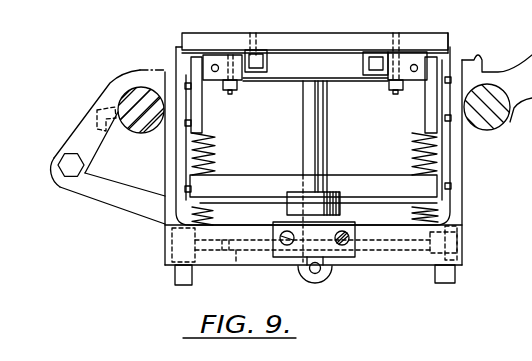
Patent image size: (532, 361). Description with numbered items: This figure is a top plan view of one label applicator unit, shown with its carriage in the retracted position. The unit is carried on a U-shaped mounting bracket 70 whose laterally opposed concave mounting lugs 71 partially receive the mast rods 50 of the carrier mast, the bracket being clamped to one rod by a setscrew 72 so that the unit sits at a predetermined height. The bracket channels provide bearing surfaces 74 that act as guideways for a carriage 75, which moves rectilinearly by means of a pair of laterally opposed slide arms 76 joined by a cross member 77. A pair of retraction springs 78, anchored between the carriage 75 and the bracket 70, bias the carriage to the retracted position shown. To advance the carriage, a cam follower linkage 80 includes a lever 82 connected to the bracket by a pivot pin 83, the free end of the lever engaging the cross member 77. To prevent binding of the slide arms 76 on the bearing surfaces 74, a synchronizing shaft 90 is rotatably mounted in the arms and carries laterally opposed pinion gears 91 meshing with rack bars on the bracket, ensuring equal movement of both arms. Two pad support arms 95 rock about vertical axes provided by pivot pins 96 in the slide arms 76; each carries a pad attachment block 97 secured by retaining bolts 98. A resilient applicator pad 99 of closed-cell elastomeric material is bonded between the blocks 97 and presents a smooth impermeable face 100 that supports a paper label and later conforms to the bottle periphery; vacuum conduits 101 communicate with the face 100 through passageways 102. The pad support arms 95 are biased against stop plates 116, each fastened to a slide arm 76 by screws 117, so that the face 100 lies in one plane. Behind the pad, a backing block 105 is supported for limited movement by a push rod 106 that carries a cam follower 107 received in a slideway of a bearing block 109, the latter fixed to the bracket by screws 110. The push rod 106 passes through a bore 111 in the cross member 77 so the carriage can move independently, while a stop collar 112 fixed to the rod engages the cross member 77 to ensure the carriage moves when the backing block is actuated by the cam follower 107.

The mast rods 50 is at (137, 100).
The mounting bracket 70 is at (165, 196).
The concave mounting lugs 71 is at (113, 78).
The setscrew 72 is at (100, 110).
The bearing surfaces 74 is at (531, 293).
The carriage 75 is at (391, 197).
The slide arms 76 is at (185, 153).
The cross member 77 is at (244, 186).
The retraction springs 78 is at (156, 168).
The cam follower linkage 80 is at (105, 207).
The lever 82 is at (158, 214).
The pivot pin 83 is at (70, 180).
The synchronizing shaft 90 is at (234, 253).
The pinion gears 91 is at (170, 280).
The pad support arms 95 is at (408, 81).
The pivot pins 96 is at (419, 68).
The pad attachment block 97 is at (225, 54).
The retaining bolts 98 is at (228, 93).
The resilient applicator pad 99 is at (442, 36).
The impermeable face 100 is at (223, 33).
The vacuum conduits 101 is at (375, 74).
The passageways 102 is at (390, 34).
The backing block 105 is at (335, 76).
The push rod 106 is at (315, 101).
The cam follower 107 is at (324, 280).
The bearing block 109 is at (286, 261).
The screws 110 is at (348, 240).
The bore 111 is at (330, 155).
The stop collar 112 is at (290, 199).
The stop plates 116 is at (196, 68).
The screws 117 is at (207, 88).